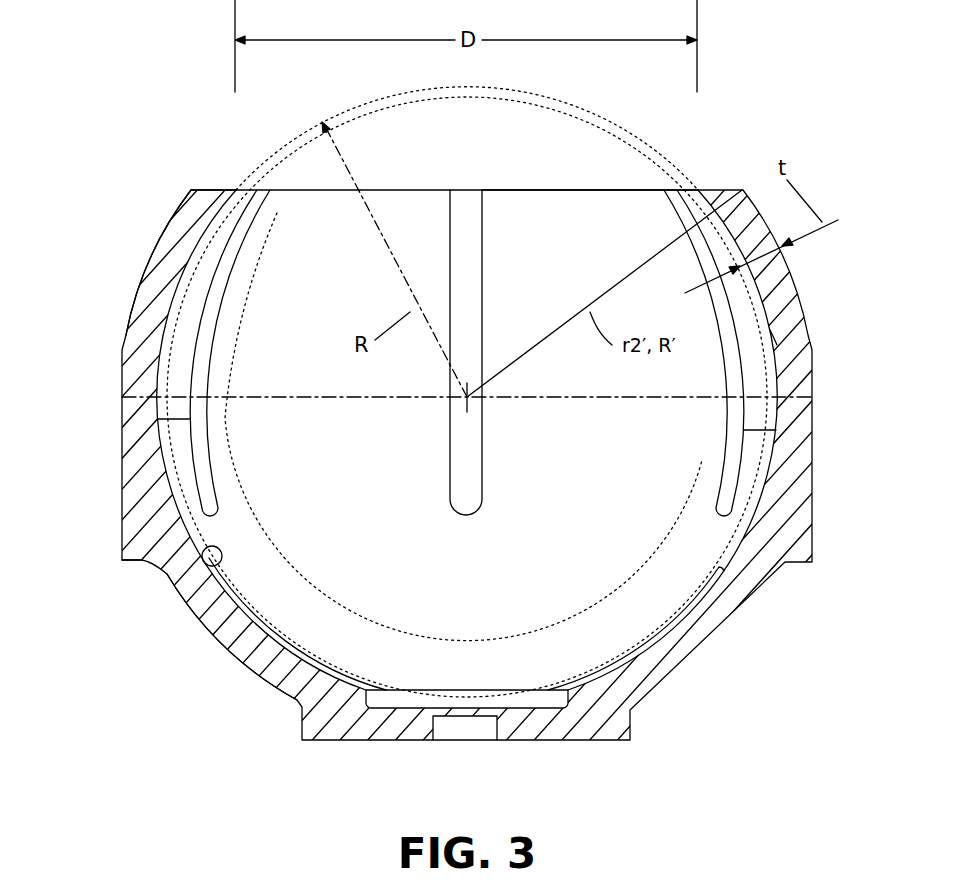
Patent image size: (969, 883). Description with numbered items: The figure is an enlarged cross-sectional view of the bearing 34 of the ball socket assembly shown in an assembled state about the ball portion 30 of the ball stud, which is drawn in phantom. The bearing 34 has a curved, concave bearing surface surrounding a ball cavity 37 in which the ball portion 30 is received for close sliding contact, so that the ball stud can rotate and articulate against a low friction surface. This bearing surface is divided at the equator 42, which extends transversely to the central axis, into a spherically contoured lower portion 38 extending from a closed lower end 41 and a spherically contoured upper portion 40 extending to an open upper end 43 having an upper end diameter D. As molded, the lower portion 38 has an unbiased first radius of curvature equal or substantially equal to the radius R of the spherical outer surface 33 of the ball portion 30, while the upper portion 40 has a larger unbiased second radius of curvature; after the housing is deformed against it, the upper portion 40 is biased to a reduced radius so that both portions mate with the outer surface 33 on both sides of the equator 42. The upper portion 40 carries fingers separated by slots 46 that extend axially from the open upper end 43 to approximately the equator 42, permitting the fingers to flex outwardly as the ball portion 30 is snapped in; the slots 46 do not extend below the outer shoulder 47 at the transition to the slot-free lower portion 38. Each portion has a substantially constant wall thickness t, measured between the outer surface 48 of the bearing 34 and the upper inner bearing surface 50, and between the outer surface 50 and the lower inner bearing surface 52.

The ball portion 30 is at (664, 176).
The outer surface 33 is at (690, 182).
The bearing 34 is at (112, 480).
The ball cavity 37 is at (547, 195).
The lower portion 38 is at (193, 607).
The upper portion 40 is at (193, 257).
The closed lower end 41 is at (330, 672).
The equator 42 is at (548, 398).
The open upper end 43 is at (204, 190).
The slots 46 is at (158, 419).
The outer shoulder 47 is at (138, 563).
The outer surface 48 is at (770, 330).
The upper inner bearing surface 50 is at (165, 213).
The lower inner bearing surface 52 is at (700, 580).